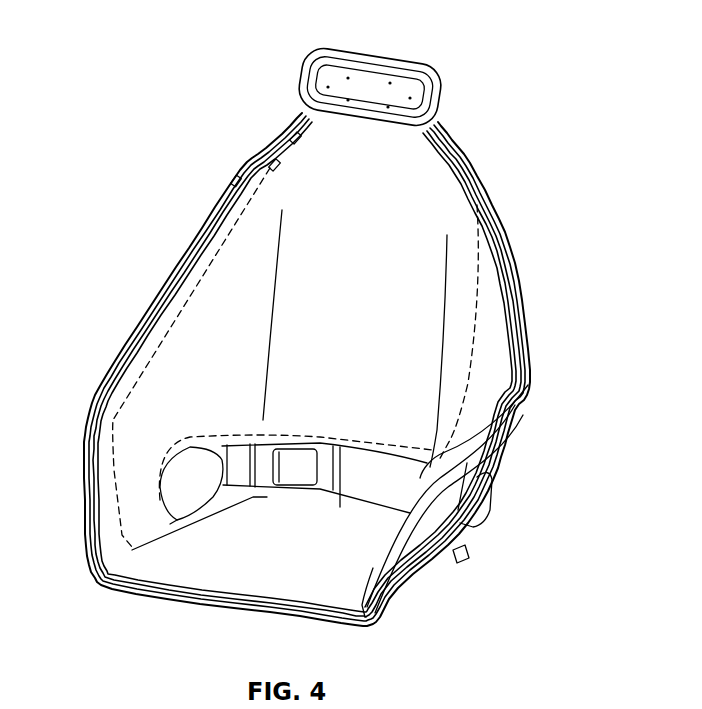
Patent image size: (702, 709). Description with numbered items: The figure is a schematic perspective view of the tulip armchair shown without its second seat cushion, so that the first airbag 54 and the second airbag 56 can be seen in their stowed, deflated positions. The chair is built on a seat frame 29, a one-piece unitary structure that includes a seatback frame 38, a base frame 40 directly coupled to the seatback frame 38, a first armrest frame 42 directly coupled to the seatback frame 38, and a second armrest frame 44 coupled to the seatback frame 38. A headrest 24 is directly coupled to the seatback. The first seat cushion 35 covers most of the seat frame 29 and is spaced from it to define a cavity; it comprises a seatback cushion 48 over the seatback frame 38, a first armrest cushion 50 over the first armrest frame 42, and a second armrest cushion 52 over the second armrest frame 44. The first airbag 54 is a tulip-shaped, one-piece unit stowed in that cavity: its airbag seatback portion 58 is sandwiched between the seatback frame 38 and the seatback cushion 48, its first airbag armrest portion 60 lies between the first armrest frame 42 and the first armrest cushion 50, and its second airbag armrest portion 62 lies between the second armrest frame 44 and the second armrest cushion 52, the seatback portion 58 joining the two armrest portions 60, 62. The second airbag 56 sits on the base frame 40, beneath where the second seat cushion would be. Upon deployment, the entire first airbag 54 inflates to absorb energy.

The headrest 24 is at (388, 76).
The seat frame 29 is at (450, 132).
The first seat cushion 35 is at (400, 185).
The seatback cushion 48 is at (440, 220).
The first airbag 54 is at (494, 262).
The airbag seatback portion 58 is at (300, 136).
The first armrest cushion 50 is at (166, 356).
The first airbag armrest portion 60 is at (140, 373).
The first armrest frame 42 is at (92, 412).
The second armrest cushion 52 is at (528, 376).
The second armrest frame 44 is at (505, 440).
The second airbag armrest portion 62 is at (463, 476).
The seatback frame 38 is at (380, 483).
The base frame 40 is at (158, 592).
The second airbag 56 is at (287, 572).